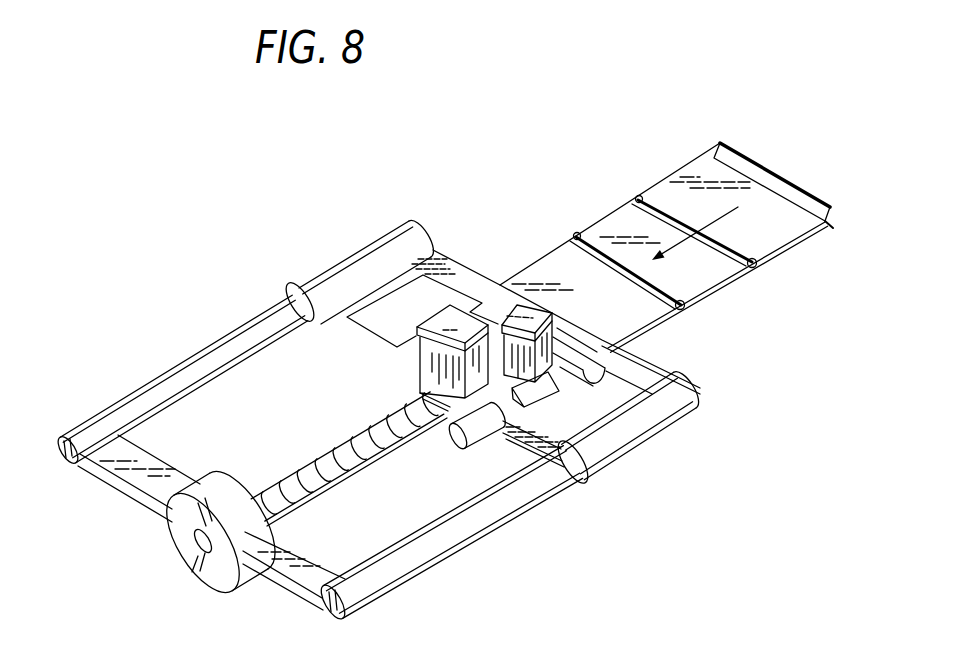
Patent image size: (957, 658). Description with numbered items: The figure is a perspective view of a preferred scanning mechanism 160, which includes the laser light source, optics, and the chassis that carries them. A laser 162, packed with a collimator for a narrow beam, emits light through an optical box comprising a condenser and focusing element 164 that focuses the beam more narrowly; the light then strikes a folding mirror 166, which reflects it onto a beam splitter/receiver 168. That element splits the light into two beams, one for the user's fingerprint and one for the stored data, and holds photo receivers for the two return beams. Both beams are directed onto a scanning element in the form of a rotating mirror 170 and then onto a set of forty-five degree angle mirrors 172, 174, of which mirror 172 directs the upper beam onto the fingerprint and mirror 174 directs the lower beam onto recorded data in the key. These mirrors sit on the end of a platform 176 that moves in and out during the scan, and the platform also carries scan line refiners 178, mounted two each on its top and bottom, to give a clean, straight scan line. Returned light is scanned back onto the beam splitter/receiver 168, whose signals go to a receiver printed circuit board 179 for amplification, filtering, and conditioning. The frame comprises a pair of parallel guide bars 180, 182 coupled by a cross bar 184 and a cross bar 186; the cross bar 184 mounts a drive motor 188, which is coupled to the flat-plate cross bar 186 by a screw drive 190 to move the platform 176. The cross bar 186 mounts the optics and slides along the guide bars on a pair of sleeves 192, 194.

The scanning mechanism 160 is at (262, 203).
The laser 162 is at (483, 433).
The condenser and focusing element 164 is at (536, 398).
The folding mirror 166 is at (580, 374).
The beam splitter/receiver 168 is at (560, 307).
The rotating mirror 170 is at (453, 315).
The 45° angle mirror 172 is at (763, 173).
The 45° angle mirror 174 is at (826, 228).
The platform 176 is at (533, 287).
The scan line refiners 178 is at (578, 237).
The receiver printed circuit board 179 is at (623, 387).
The guide bar 180 is at (203, 355).
The guide bar 182 is at (393, 587).
The cross bar 184 is at (143, 480).
The cross bar 186 is at (390, 355).
The drive motor 188 is at (181, 538).
The screw drive 190 is at (366, 455).
The sleeve 192 is at (392, 232).
The sleeve 194 is at (693, 410).